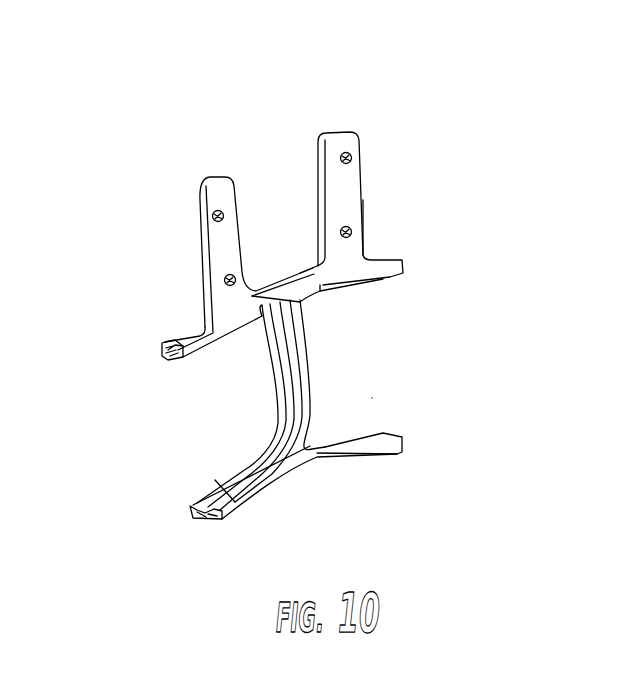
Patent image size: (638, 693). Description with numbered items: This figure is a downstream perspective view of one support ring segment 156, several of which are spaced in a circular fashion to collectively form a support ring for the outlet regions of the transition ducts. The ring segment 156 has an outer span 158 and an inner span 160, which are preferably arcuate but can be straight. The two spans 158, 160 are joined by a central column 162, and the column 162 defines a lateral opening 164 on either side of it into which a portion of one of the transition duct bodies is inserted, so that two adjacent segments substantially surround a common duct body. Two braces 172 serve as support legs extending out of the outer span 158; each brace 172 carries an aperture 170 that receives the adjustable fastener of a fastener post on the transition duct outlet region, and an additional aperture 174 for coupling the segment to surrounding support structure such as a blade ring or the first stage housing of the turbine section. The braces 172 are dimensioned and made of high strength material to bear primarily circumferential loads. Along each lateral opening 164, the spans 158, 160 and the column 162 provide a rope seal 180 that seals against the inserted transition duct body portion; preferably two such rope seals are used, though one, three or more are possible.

The support ring segment 156 is at (297, 181).
The outer span 158 is at (376, 268).
The inner span 160 is at (345, 452).
The central column 162 is at (304, 378).
The lateral opening 164 is at (372, 398).
The aperture 170 is at (341, 235).
The brace 172 is at (227, 178).
The additional aperture 174 is at (212, 217).
The rope seal 180 is at (227, 494).